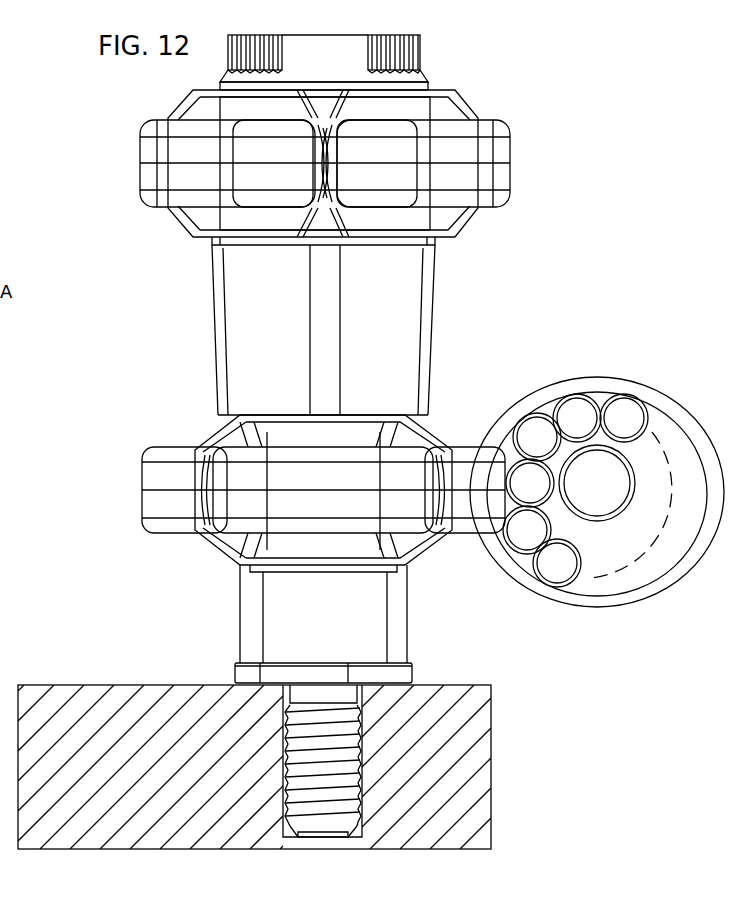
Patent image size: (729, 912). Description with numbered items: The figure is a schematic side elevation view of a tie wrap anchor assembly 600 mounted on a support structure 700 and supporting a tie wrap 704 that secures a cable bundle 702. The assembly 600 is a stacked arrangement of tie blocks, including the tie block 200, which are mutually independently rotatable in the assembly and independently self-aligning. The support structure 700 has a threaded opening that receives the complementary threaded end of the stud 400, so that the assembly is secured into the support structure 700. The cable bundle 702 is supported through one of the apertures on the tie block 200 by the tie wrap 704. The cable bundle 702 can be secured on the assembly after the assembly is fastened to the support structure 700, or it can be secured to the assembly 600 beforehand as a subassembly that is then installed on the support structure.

The tie wrap anchor assembly 600 is at (211, 62).
The tie block 200 is at (187, 431).
The stud 400 is at (222, 663).
The support structure 700 is at (158, 679).
The tie wrap 704 is at (531, 393).
The cable bundle 702 is at (650, 420).